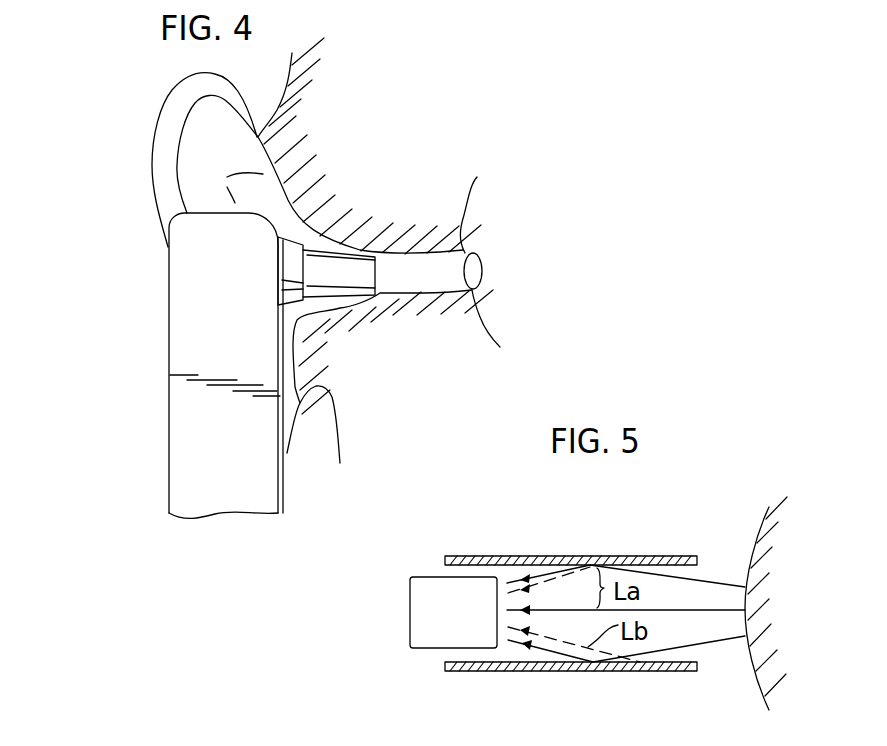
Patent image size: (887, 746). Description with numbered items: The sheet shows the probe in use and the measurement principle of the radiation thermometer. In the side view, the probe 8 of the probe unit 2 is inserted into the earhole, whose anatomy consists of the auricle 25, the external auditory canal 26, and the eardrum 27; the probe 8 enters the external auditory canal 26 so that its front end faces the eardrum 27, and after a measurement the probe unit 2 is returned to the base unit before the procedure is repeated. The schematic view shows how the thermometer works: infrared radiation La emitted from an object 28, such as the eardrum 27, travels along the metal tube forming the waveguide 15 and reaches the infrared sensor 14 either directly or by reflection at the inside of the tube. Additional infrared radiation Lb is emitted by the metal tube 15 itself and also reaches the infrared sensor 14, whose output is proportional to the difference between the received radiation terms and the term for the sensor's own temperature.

In FIG. 4, the probe unit 2 is at (170, 395).
In FIG. 4, the probe 8 is at (360, 284).
In FIG. 4, the auricle 25 is at (156, 162).
In FIG. 4, the external auditory canal 26 is at (437, 293).
In FIG. 4, the eardrum 27 is at (475, 257).
In FIG. 5, the infrared sensor 14 is at (423, 577).
In FIG. 5, the waveguide 15 is at (543, 556).
In FIG. 5, the object 28 is at (764, 530).